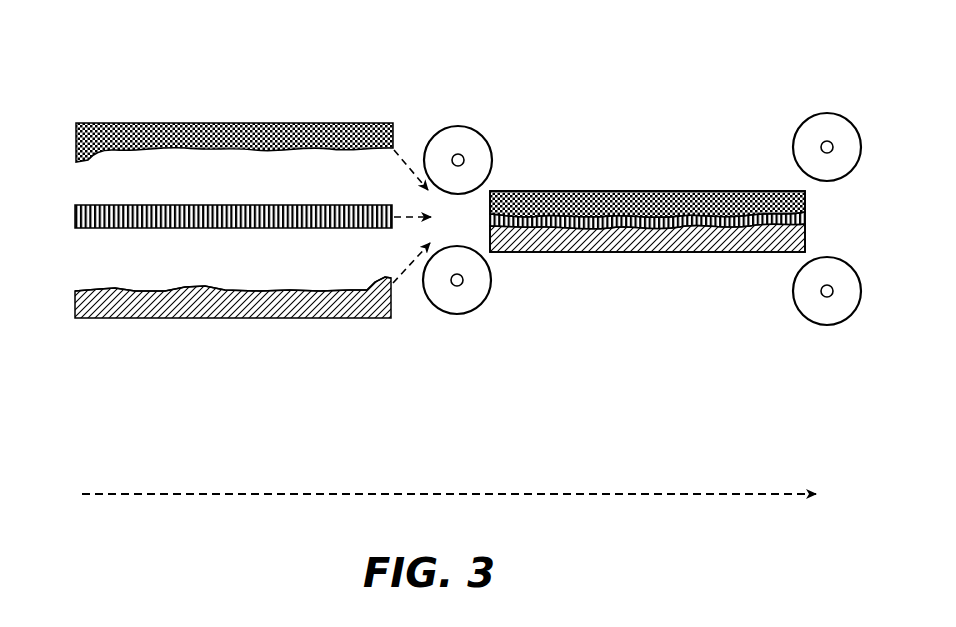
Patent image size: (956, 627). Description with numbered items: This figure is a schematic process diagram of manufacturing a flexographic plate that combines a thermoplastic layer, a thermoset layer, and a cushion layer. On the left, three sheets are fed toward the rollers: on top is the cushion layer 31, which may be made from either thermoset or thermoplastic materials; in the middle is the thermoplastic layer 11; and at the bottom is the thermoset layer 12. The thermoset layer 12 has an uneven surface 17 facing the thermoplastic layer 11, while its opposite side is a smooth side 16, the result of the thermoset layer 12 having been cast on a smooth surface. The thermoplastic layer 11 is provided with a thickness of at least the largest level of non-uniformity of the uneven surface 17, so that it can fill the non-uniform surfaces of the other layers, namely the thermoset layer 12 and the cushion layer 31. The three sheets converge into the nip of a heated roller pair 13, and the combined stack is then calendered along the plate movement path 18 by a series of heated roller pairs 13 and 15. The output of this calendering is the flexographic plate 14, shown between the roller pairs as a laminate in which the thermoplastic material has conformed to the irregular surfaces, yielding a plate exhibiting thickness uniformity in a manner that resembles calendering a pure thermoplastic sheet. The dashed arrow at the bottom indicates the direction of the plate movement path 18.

The cushion layer 31 is at (207, 123).
The thermoplastic layer 11 is at (176, 205).
The thermoset layer 12 is at (117, 330).
The heated roller pair 13 is at (460, 126).
The flexographic plate 14 is at (597, 126).
The heated roller pair 15 is at (832, 112).
The smooth side 16 is at (328, 318).
The uneven surface 17 is at (137, 290).
The plate movement path 18 is at (616, 494).